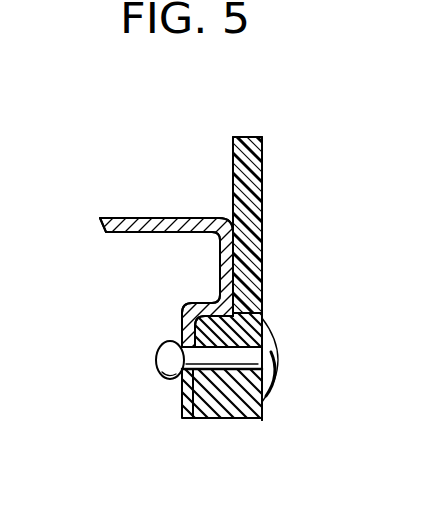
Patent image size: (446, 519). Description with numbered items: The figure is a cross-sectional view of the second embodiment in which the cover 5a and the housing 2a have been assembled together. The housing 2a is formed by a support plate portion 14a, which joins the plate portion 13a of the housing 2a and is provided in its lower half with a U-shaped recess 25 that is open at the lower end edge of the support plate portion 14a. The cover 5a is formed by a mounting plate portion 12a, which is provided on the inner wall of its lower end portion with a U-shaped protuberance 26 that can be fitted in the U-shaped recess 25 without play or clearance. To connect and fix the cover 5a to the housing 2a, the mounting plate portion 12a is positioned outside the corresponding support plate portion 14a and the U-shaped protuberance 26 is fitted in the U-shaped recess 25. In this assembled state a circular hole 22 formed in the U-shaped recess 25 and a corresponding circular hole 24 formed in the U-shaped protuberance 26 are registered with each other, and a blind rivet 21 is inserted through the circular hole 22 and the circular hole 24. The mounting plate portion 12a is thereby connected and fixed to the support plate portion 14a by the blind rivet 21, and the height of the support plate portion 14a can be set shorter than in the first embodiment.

The housing 2a is at (118, 214).
The horizontal plate portion 13a is at (172, 228).
The support plate portion 14a is at (221, 262).
The cover 5a is at (268, 166).
The mounting plate portion 12a is at (263, 272).
The circular hole 24 is at (186, 322).
The U-shaped recess 25 is at (242, 332).
The circular hole 22 is at (160, 343).
The blind rivet 21 is at (274, 352).
The U-shaped protuberance 26 is at (220, 410).